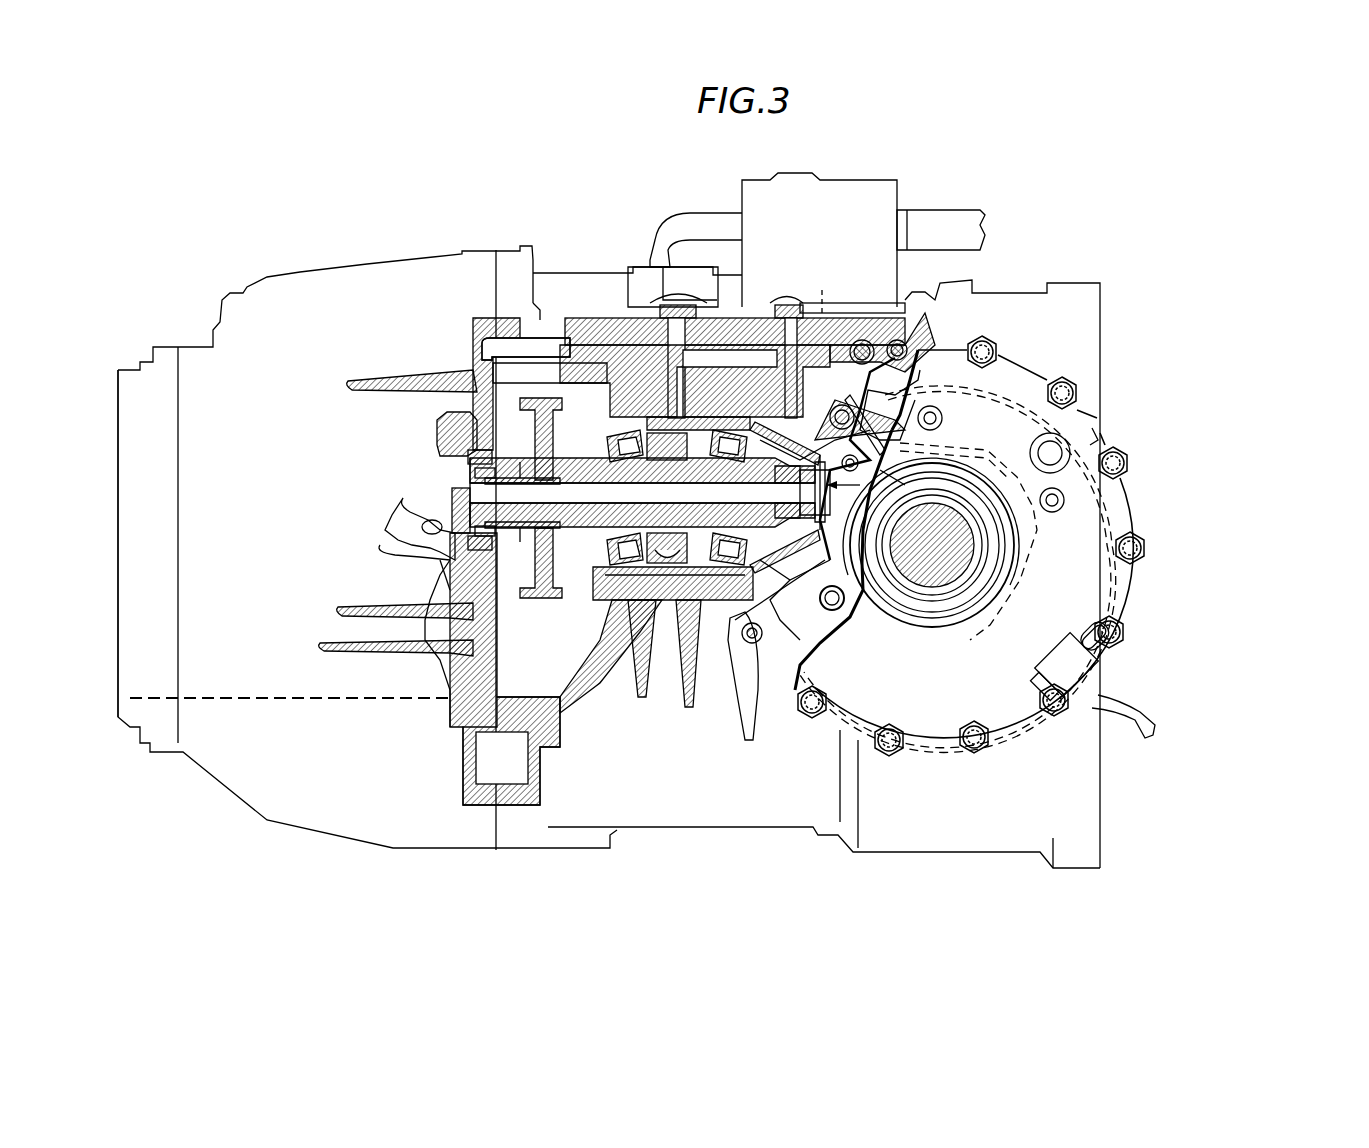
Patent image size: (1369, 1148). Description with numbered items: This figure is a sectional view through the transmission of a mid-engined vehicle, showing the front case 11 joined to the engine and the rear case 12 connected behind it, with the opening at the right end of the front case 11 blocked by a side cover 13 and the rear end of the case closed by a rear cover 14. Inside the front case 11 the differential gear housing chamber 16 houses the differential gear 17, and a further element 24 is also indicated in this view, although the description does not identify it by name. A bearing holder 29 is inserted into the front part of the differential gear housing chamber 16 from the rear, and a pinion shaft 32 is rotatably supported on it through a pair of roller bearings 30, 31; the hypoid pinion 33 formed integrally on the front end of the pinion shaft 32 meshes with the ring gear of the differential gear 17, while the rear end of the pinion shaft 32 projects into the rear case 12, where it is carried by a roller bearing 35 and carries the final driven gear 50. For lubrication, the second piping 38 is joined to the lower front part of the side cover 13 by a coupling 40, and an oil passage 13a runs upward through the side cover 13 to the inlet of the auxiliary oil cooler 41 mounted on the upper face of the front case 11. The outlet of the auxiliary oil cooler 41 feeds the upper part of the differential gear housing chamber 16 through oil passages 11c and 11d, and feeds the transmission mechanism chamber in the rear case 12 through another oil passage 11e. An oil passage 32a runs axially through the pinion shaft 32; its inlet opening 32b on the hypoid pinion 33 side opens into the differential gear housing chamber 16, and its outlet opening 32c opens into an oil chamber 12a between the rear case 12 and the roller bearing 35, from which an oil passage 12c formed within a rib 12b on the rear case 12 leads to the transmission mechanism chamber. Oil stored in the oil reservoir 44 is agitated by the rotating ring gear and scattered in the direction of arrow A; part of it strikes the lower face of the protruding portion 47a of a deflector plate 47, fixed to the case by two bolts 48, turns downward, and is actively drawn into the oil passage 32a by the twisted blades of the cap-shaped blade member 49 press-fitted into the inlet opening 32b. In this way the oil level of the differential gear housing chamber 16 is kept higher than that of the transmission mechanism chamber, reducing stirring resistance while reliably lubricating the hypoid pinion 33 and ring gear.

The front case 11 is at (998, 283).
The oil passage 11c is at (782, 385).
The oil passage 11d is at (668, 390).
The oil passage 11e is at (532, 360).
The rear case 12 is at (312, 258).
The oil chamber 12a is at (455, 565).
The rib 12b is at (395, 548).
The oil passage 12c is at (418, 520).
The side cover 13 is at (1042, 372).
The oil passage 13a is at (1098, 604).
The rear cover 14 is at (122, 478).
The differential gear housing chamber 16 is at (575, 661).
The differential gear 17 is at (738, 668).
The output shaft 24 is at (945, 575).
The bearing holder 29 is at (665, 565).
The roller bearing 30 is at (732, 430).
The roller bearing 31 is at (612, 440).
The pinion shaft 32 is at (707, 600).
The oil passage 32a is at (548, 470).
The inlet opening 32b is at (778, 470).
The outlet opening 32c is at (470, 480).
The hypoid pinion 33 is at (780, 592).
The roller bearing 35 is at (478, 468).
The second piping 38 is at (1138, 690).
The coupling 40 is at (1100, 680).
The auxiliary oil cooler 41 is at (858, 195).
The oil reservoir 44 is at (783, 620).
The deflector plate 47 is at (830, 470).
The protruding portion 47a is at (864, 425).
The bolt 48 is at (862, 392).
The blade member 49 is at (780, 490).
The final driven gear 50 is at (545, 592).